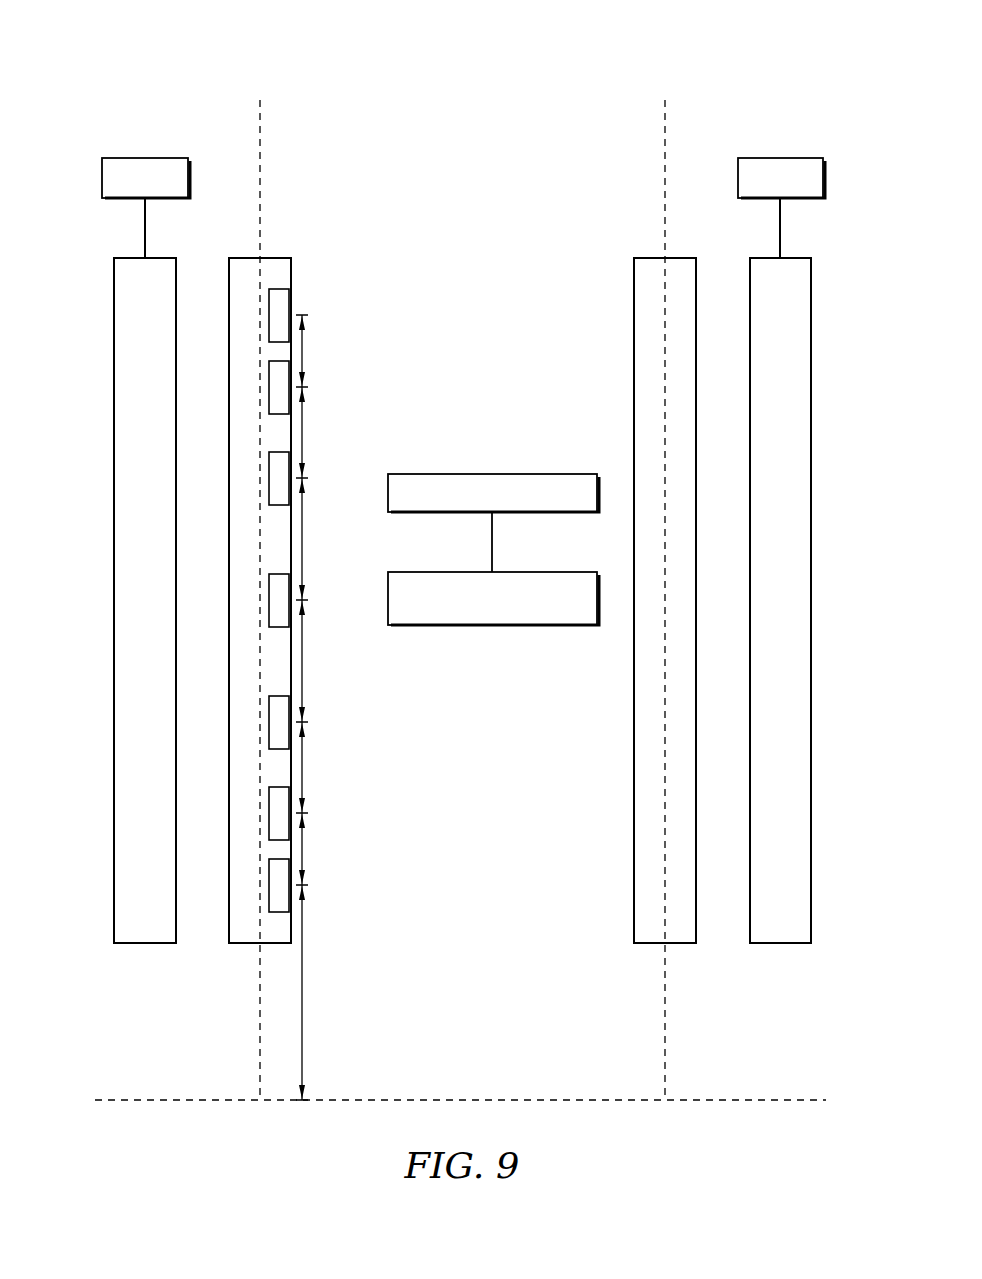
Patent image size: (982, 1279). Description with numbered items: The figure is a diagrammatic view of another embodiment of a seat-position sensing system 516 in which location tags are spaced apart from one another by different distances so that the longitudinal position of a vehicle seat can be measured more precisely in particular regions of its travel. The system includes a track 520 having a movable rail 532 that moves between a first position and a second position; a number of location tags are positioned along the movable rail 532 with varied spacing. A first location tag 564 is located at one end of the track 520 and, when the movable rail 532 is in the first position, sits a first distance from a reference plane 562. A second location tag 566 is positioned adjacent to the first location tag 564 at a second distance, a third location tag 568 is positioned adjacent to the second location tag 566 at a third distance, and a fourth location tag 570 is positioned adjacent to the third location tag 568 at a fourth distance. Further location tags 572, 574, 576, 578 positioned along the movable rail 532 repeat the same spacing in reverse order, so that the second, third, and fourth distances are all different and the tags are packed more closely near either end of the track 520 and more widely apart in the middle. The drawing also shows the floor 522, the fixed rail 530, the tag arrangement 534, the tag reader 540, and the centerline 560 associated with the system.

The seat-position sensing system 516 is at (136, 72).
The track 520 is at (120, 126).
The floor 522 is at (162, 158).
The upright post 530 is at (114, 442).
The movable rail 532 is at (275, 258).
The tag arrangement 534 is at (383, 338).
The tag reader 540 is at (539, 572).
The post centerline 560 is at (261, 180).
The reference plane 562 is at (465, 1100).
The first location tag 564 is at (269, 885).
The second location tag 566 is at (269, 813).
The third location tag 568 is at (269, 722).
The fourth location tag 570 is at (269, 600).
The tag 572 is at (269, 478).
The tag 574 is at (269, 387).
The foundation 576 is at (524, 474).
The tag 578 is at (269, 315).